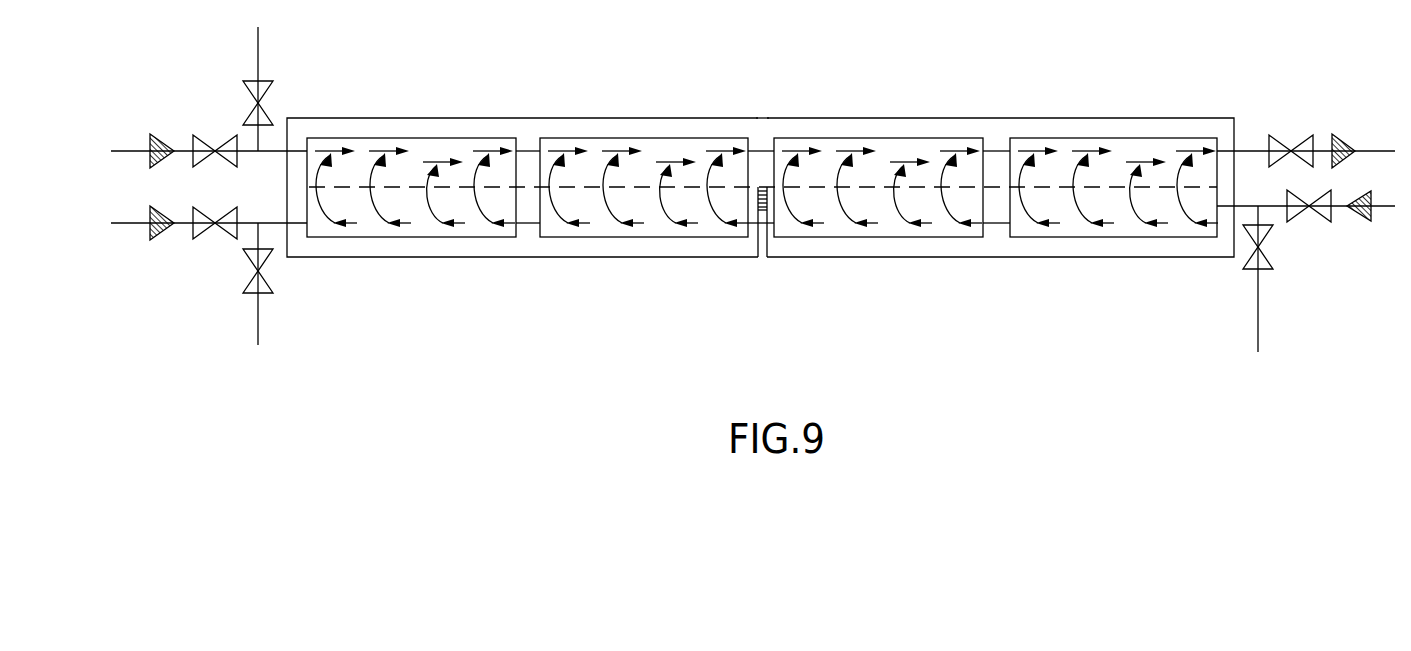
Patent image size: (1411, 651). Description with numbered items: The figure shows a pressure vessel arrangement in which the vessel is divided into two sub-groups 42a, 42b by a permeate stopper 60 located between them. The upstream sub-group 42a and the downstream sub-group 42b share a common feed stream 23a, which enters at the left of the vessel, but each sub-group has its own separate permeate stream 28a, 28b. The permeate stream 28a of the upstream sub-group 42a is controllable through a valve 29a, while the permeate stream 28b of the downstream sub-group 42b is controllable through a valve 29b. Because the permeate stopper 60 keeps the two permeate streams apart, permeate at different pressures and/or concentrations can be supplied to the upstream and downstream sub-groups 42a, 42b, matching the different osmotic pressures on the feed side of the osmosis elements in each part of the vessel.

The feed stream 23a is at (133, 151).
The permeate stream 28a is at (127, 223).
The valve 29a is at (222, 239).
The sub-group 42a is at (752, 105).
The sub-group 42b is at (1223, 105).
The permeate stopper 60 is at (762, 253).
The valve 29b is at (1318, 221).
The permeate stream 28b is at (1358, 221).